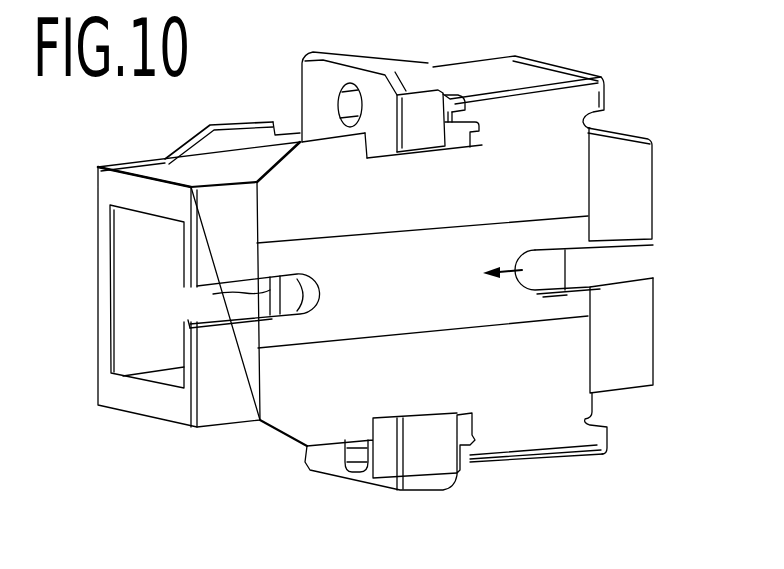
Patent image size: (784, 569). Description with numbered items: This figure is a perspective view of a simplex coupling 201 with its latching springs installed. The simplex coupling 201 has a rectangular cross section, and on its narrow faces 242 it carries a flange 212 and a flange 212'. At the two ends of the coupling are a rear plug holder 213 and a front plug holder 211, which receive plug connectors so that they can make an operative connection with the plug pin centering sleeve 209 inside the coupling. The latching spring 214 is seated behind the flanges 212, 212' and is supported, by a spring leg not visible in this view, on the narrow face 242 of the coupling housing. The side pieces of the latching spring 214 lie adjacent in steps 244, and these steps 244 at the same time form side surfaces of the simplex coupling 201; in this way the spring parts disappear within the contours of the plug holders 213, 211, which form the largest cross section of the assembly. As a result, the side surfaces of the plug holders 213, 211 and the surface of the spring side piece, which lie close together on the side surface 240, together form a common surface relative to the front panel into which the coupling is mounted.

The simplex coupling 201 is at (198, 121).
The narrow face 242 is at (151, 176).
The rear plug holder 213 is at (132, 264).
The plug pin centering sleeve 209 is at (270, 283).
The flange 212 is at (364, 102).
The flange 212' is at (390, 480).
The latching spring 214 is at (546, 112).
The front plug holder 211 is at (640, 207).
The side surface 240 is at (522, 270).
The steps 244 is at (337, 327).